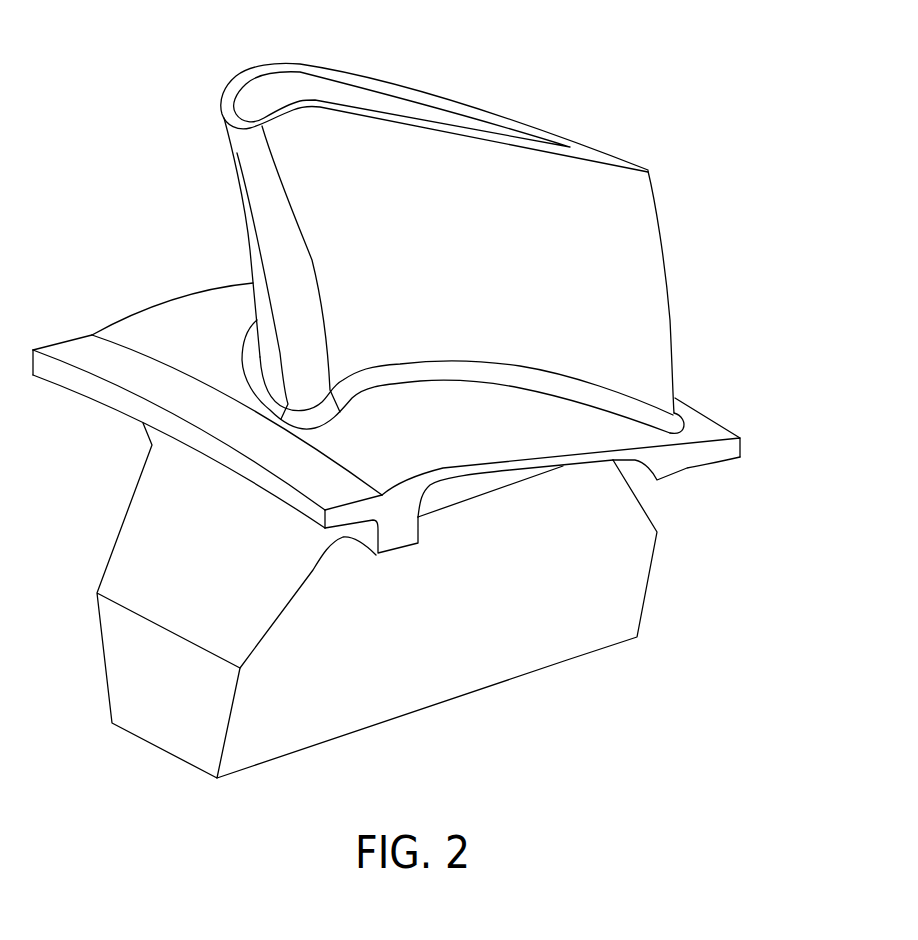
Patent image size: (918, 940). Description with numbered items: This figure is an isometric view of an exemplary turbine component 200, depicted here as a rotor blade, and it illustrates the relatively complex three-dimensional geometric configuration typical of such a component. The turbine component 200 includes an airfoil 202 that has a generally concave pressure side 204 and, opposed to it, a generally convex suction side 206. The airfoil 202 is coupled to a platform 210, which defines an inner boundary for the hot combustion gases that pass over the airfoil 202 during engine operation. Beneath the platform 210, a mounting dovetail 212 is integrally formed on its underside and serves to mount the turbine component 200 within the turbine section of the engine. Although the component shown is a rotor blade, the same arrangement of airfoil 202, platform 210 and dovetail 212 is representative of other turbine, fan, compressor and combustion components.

The turbine component 200 is at (436, 393).
The airfoil 202 is at (530, 220).
The pressure side 204 is at (485, 284).
The suction side 206 is at (296, 63).
The platform 210 is at (158, 318).
The mounting dovetail 212 is at (117, 684).